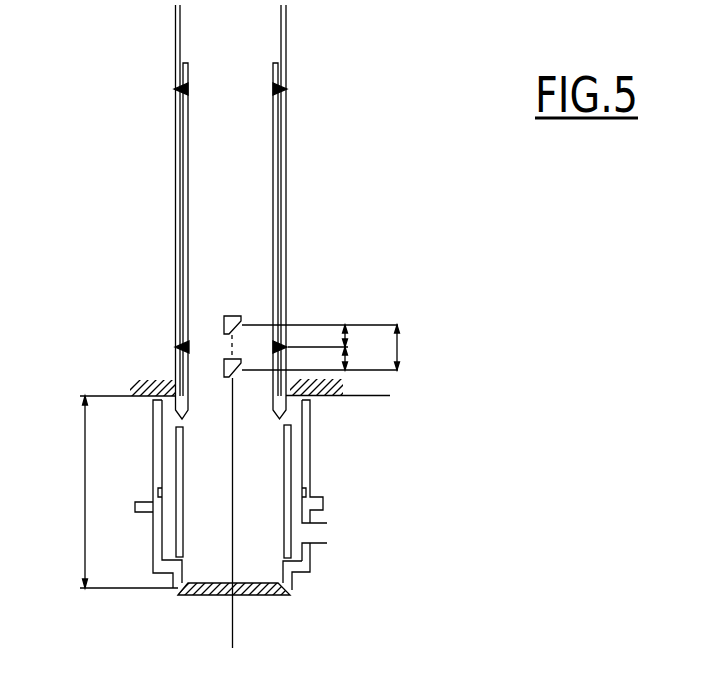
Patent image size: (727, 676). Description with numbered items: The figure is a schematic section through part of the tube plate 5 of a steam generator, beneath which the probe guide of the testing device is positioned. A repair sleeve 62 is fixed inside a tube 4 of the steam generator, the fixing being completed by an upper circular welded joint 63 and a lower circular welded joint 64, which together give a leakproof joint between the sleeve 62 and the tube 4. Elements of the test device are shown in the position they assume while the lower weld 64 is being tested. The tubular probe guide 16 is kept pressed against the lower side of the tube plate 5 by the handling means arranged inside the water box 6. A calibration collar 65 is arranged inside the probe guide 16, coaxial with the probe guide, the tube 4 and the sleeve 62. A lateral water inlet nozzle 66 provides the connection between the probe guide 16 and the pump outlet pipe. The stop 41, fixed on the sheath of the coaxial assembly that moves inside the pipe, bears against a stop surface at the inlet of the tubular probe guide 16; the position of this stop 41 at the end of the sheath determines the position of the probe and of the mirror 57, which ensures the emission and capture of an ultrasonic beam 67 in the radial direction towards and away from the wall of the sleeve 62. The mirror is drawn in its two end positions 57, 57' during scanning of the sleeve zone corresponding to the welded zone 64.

The tube 4 is at (284, 34).
The repair sleeve 62 is at (277, 148).
The upper circular welded joint 63 is at (287, 89).
The lower circular welded joint 64 is at (176, 349).
The mirror 57 is at (173, 314).
The mirror end position 57' is at (317, 503).
The ultrasonic beam 67 is at (248, 323).
The tube plate 5 is at (326, 395).
The tubular probe guide 16 is at (157, 560).
The lateral water inlet nozzle 66 is at (318, 538).
The calibration collar 65 is at (285, 470).
The stop 41 is at (203, 595).
The water box 6 is at (73, 492).